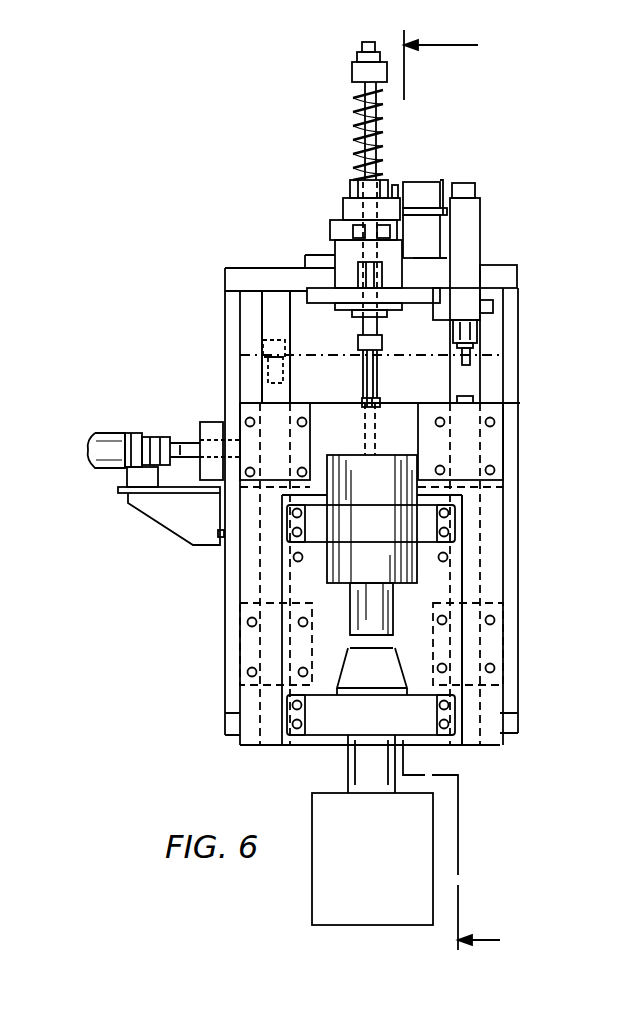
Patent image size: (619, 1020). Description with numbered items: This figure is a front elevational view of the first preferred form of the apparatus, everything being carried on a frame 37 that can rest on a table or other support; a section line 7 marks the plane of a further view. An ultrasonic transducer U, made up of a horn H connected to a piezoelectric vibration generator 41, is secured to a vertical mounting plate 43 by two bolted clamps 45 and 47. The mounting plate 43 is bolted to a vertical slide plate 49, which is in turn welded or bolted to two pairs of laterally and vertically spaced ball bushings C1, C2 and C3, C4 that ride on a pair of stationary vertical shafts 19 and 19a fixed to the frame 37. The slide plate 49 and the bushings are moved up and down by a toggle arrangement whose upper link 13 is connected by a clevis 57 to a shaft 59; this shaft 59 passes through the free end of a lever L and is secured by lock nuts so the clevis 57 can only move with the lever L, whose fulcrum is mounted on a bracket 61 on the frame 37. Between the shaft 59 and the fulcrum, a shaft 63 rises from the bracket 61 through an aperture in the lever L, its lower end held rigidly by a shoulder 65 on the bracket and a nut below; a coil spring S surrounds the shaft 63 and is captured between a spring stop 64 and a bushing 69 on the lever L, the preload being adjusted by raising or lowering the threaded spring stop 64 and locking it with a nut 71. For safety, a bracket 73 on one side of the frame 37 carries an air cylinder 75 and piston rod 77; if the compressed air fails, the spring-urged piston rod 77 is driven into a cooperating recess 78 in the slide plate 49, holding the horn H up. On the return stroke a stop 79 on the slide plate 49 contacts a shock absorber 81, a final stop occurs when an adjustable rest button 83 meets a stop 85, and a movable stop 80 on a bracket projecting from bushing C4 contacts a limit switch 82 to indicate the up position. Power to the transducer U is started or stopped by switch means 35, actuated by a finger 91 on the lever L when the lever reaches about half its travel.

The section line 7- 7 is at (461, 491).
The upper second link 13 is at (361, 328).
The stationary vertical shaft 19 is at (480, 350).
The stationary vertical shaft 19a is at (258, 330).
The switch means 35 is at (421, 188).
The frame 37 is at (515, 657).
The piezoelectric vibration generator 41 is at (378, 467).
The vertical mounting plate 43 is at (455, 590).
The bolted clamp 45 is at (384, 724).
The bolted clamp 47 is at (384, 533).
The vertical slide plate 49 is at (503, 412).
The clevis 57 is at (345, 268).
The shaft 59 is at (330, 228).
The bracket 61 is at (496, 275).
The shaft 63 is at (355, 108).
The spring stop 64 is at (352, 73).
The shoulder 65 is at (392, 237).
The bushing 69 is at (352, 183).
The nut 71 is at (358, 56).
The bracket 73 is at (160, 520).
The air cylinder 75 is at (102, 434).
The piston rod 77 is at (172, 438).
The recess 78 is at (212, 547).
The stop 79 is at (473, 397).
The movable stop 80 is at (286, 368).
The shock absorber 81 is at (471, 358).
The limit switch 82 is at (290, 350).
The adjustable rest button 83 is at (382, 402).
The stop 85 is at (382, 343).
The finger 91 is at (395, 185).
The ball bushing C1 is at (498, 610).
The ball bushing C2 is at (242, 612).
The ball bushing C3 is at (495, 437).
The ball bushing C4 is at (248, 414).
The horn H is at (385, 852).
The lever L is at (345, 200).
The coil spring S is at (378, 128).
The ultrasonic transducer U is at (352, 765).